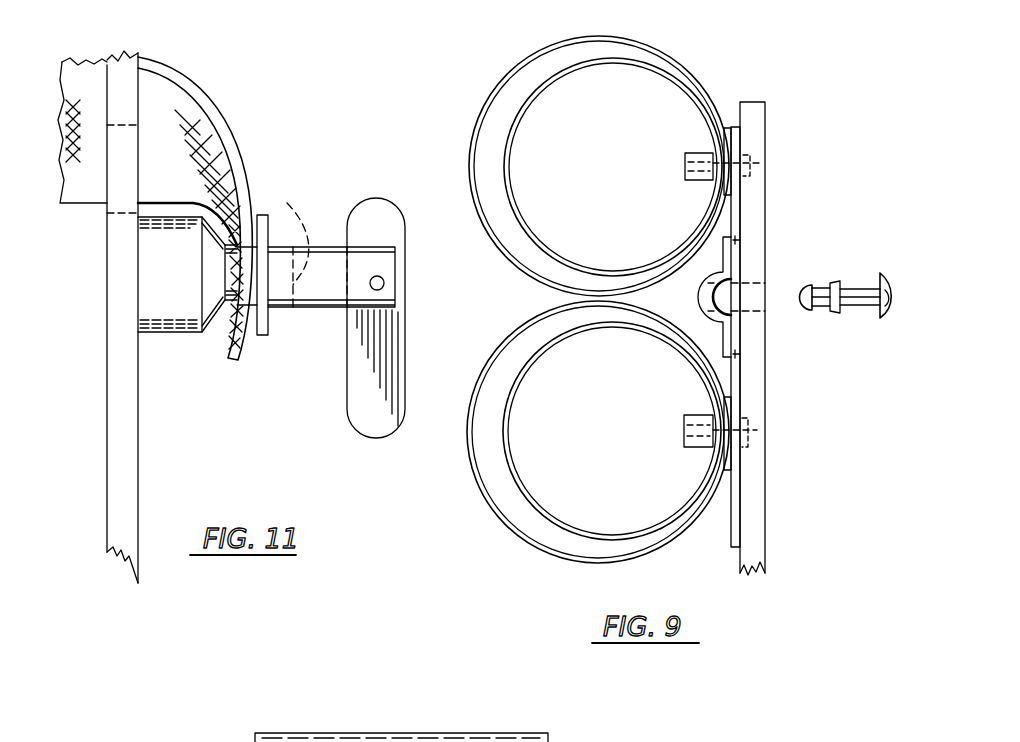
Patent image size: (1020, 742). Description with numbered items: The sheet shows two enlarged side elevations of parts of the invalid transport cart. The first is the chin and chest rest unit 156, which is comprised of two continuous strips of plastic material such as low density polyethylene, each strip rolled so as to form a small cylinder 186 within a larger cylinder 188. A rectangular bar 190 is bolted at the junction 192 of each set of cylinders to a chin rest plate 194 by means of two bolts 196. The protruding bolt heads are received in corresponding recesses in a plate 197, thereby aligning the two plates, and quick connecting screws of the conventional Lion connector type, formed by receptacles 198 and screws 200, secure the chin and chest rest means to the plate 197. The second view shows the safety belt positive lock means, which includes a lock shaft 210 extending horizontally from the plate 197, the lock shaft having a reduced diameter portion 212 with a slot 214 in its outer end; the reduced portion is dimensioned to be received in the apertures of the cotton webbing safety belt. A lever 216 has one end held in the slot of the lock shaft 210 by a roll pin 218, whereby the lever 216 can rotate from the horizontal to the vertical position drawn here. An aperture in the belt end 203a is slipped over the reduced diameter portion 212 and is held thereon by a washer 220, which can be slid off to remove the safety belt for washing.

In FIG. 9, the chin and chest rest unit 156 is at (784, 134).
In FIG. 9, the small cylinder 186 is at (547, 93).
In FIG. 9, the larger cylinder 188 is at (494, 94).
In FIG. 9, the rectangular bar 190 is at (697, 182).
In FIG. 9, the junction 192 is at (728, 163).
In FIG. 9, the chin rest plate 194 is at (737, 124).
In FIG. 9, the bolts 196 is at (765, 164).
In FIG. 11, the plate 197 is at (113, 331).
In FIG. 9, the plate 197 is at (763, 481).
In FIG. 9, the receptacles 198 is at (708, 280).
In FIG. 9, the screws 200 is at (852, 286).
In FIG. 11, the belt end 203a is at (167, 97).
In FIG. 11, the lock shaft 210 is at (183, 300).
In FIG. 11, the reduced diameter portion 212 is at (279, 289).
In FIG. 11, the slot 214 is at (307, 247).
In FIG. 11, the lever 216 is at (387, 348).
In FIG. 11, the roll pin 218 is at (383, 280).
In FIG. 11, the washer 220 is at (258, 215).